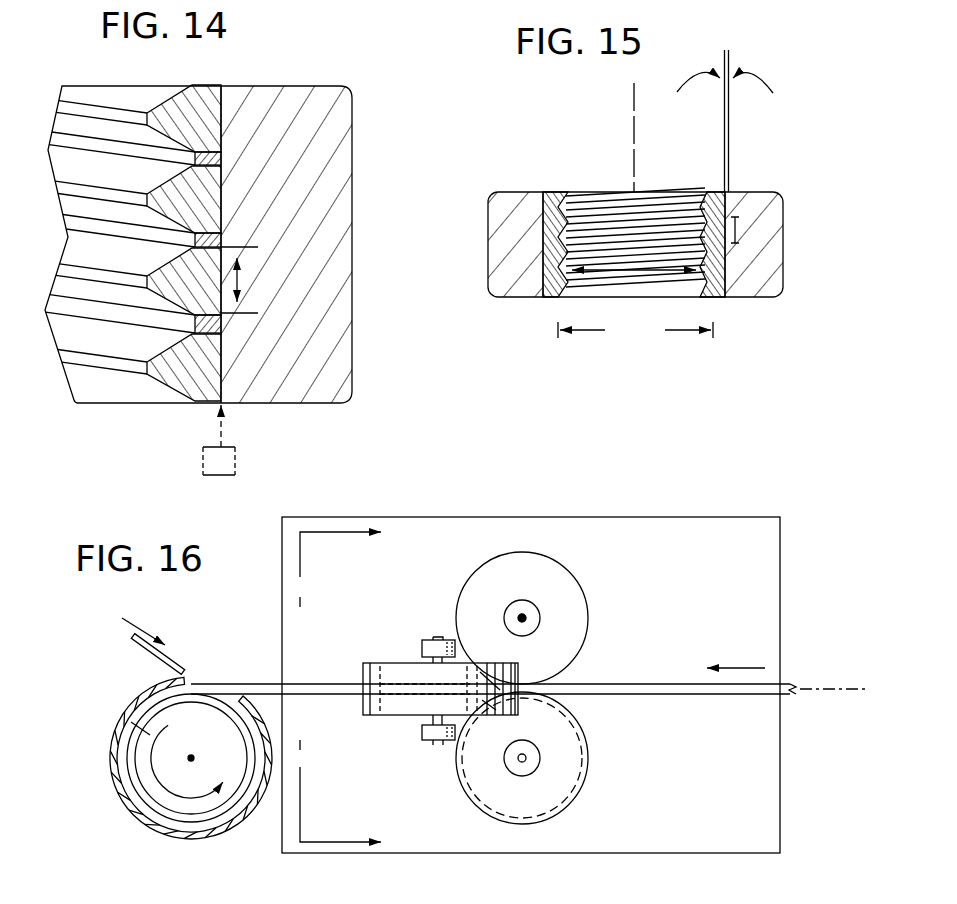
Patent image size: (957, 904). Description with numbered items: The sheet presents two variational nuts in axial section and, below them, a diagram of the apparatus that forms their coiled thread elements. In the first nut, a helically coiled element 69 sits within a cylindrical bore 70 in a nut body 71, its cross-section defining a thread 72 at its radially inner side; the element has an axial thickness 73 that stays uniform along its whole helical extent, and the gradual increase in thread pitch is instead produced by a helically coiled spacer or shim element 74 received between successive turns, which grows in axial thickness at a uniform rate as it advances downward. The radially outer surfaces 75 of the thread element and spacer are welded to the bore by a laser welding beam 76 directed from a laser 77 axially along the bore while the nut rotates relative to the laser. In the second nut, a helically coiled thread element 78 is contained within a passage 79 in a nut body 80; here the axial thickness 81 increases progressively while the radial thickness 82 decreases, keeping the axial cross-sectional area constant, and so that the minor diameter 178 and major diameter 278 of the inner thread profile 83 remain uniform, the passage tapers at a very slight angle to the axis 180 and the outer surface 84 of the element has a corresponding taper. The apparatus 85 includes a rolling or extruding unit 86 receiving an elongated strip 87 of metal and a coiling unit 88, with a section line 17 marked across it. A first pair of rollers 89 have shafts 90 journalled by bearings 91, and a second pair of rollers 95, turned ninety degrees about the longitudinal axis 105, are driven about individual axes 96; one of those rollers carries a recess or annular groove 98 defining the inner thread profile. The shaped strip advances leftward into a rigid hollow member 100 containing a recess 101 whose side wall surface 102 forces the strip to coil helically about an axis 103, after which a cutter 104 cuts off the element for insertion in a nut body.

In FIG. 14, the helically coiled element 69 is at (187, 373).
In FIG. 14, the cylindrical bore 70 is at (222, 408).
In FIG. 14, the nut body 71 is at (340, 233).
In FIG. 14, the thread 72 is at (123, 372).
In FIG. 14, the axial thickness 73 is at (240, 283).
In FIG. 14, the spacer or shim element 74 is at (215, 160).
In FIG. 14, the radially outer surfaces 75 is at (210, 322).
In FIG. 14, the laser welding beam 76 is at (214, 425).
In FIG. 14, the laser 77 is at (237, 472).
In FIG. 15, the helically coiled thread element 78 is at (553, 193).
In FIG. 15, the passage 79 is at (713, 193).
In FIG. 15, the nut body 80 is at (757, 188).
In FIG. 15, the axial thickness 81 is at (703, 249).
In FIG. 15, the radial thickness 82 is at (775, 297).
In FIG. 15, the inner thread profile 83 is at (568, 235).
In FIG. 15, the outer surface 84 is at (743, 297).
In FIG. 15, the minor diameter 178 is at (658, 272).
In FIG. 15, the axis 180 is at (633, 100).
In FIG. 15, the major diameter 278 is at (635, 330).
In FIG. 16, the section line 17 is at (340, 687).
In FIG. 16, the apparatus 85 is at (402, 498).
In FIG. 16, the rolling or extruding unit 86 is at (550, 516).
In FIG. 16, the elongated strip 87 is at (710, 694).
In FIG. 16, the coiling unit 88 is at (137, 830).
In FIG. 16, the first pair of rollers 89 is at (363, 673).
In FIG. 16, the shafts 90 is at (433, 740).
In FIG. 16, the bearings 91 is at (422, 647).
In FIG. 16, the second pair of rollers 95 is at (578, 632).
In FIG. 16, the individual axes 96 is at (535, 612).
In FIG. 16, the recess or annular groove 98 is at (590, 790).
In FIG. 16, the rigid hollow member 100 is at (128, 821).
In FIG. 16, the recess 101 is at (137, 767).
In FIG. 16, the side wall surface 102 is at (145, 730).
In FIG. 16, the axis 103 is at (190, 758).
In FIG. 16, the cutter 104 is at (150, 650).
In FIG. 16, the longitudinal axis 105 is at (833, 694).